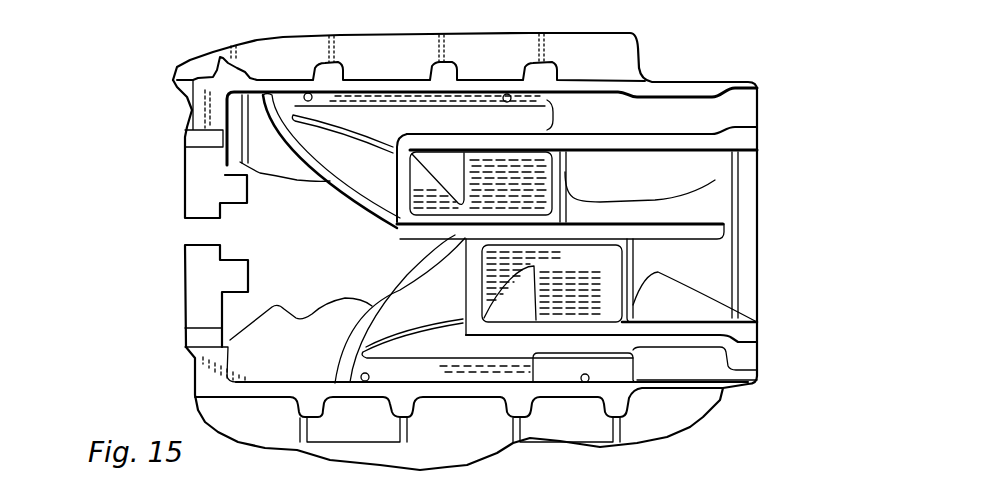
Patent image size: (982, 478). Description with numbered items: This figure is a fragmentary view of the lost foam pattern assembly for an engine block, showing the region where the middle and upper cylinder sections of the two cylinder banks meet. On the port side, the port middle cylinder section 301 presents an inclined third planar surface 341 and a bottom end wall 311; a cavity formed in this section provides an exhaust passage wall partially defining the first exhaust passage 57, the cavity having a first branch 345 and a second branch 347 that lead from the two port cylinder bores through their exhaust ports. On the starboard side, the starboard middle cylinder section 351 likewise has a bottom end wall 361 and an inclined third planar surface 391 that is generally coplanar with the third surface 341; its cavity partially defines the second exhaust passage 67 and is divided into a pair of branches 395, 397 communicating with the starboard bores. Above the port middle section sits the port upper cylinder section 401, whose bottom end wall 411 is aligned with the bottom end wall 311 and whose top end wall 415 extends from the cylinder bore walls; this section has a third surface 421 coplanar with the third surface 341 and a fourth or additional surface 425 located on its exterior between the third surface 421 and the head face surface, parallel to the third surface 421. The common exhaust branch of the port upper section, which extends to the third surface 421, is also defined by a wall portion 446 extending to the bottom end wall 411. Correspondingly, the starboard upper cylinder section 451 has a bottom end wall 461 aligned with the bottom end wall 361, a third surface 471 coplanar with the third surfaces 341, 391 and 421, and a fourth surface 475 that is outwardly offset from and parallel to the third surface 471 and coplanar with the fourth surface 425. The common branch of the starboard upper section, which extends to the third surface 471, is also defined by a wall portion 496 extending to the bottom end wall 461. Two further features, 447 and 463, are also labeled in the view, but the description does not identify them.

The first exhaust passage 57 is at (682, 168).
The second exhaust passage 67 is at (707, 267).
The port middle cylinder section 301 is at (674, 200).
The bottom end wall 311 is at (757, 228).
The third planar surface 341 is at (402, 216).
The first branch 345 is at (407, 160).
The second branch 347 is at (462, 158).
The starboard middle cylinder section 351 is at (654, 256).
The bottom end wall 361 is at (757, 294).
The third planar surface 391 is at (472, 253).
The branch 395 is at (485, 284).
The branch 397 is at (578, 296).
The port upper cylinder section 401 is at (737, 114).
The bottom end wall 411 is at (757, 128).
The top end wall 415 is at (416, 140).
The third surface 421 is at (680, 142).
The fourth or additional surface 425 is at (475, 82).
The wall portion 446 is at (623, 148).
The recess 447 is at (622, 176).
The starboard upper cylinder section 451 is at (752, 360).
The bottom end wall 461 is at (757, 328).
The bottom edge 463 is at (658, 388).
The third surface 471 is at (640, 323).
The fourth surface 475 is at (465, 390).
The wall portion 496 is at (742, 357).